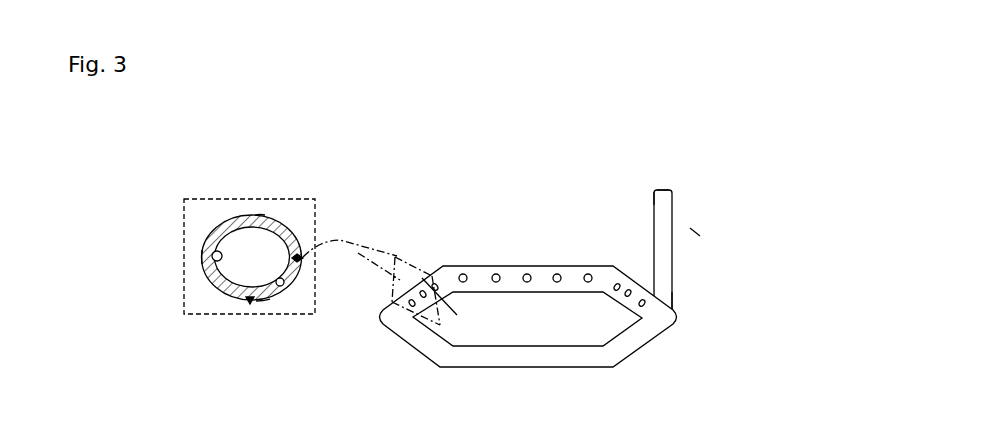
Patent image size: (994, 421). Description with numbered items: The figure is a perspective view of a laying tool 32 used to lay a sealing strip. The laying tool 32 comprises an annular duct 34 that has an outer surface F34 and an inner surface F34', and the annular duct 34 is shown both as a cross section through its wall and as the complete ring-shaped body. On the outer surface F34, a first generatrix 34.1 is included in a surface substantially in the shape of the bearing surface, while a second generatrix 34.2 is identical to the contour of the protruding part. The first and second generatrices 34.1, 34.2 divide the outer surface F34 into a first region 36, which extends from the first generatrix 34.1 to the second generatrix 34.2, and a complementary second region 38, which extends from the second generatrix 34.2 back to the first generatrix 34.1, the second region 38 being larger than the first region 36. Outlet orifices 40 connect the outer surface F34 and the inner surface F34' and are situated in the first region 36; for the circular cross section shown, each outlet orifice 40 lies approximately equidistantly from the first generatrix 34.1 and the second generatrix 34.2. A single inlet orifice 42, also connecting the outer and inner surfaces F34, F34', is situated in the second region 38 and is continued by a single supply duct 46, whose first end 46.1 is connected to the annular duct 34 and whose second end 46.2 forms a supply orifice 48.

The laying tool 32 is at (692, 232).
The annular duct 34 is at (212, 215).
The first generatrix 34.1 is at (250, 303).
The second generatrix 34.2 is at (303, 257).
The first region 36 is at (264, 304).
The second region 38 is at (203, 245).
The outlet orifices 40 is at (287, 285).
The inlet orifice 42 is at (673, 327).
The supply duct 46 is at (654, 233).
The first end 46.1 is at (673, 298).
The second end 46.2 is at (654, 199).
The supply orifice 48 is at (664, 189).
The outer surface F34 is at (250, 173).
The inner surface F34' is at (157, 265).